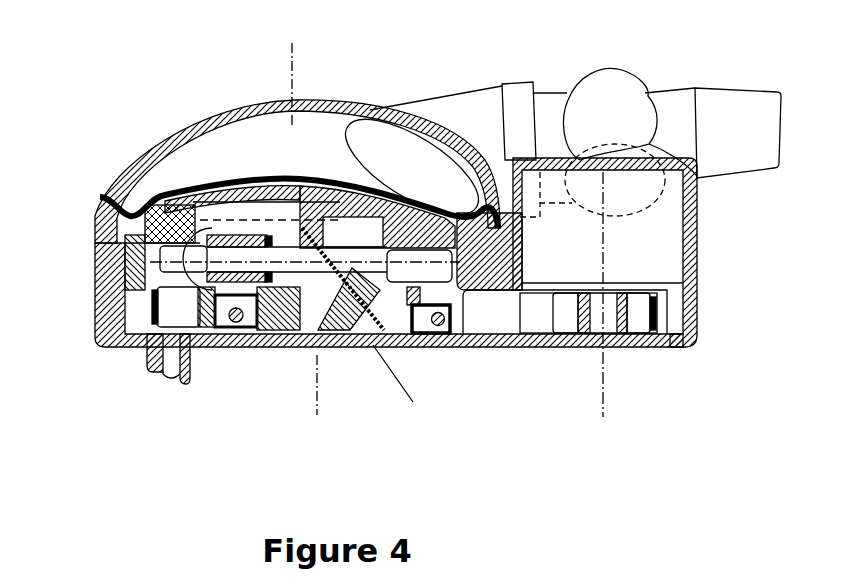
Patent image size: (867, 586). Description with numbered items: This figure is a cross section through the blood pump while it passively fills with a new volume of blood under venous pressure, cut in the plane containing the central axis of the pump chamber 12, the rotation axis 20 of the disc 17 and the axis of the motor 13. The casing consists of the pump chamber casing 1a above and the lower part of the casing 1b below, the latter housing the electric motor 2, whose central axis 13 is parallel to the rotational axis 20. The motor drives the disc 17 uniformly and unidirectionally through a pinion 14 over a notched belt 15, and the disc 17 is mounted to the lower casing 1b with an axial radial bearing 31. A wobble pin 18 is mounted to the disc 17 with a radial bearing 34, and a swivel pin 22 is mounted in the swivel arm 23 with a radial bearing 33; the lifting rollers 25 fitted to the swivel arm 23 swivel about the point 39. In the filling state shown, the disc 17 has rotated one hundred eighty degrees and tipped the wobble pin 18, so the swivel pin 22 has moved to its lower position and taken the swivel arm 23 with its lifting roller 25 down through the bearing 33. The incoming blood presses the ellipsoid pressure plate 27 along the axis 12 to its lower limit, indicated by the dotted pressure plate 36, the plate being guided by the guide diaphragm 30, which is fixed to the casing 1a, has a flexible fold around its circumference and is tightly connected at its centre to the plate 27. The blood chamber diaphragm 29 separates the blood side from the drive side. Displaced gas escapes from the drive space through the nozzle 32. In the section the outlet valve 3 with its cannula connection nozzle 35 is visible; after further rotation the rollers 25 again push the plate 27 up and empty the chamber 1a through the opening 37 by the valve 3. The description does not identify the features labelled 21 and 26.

The pump chamber casing 1a is at (113, 172).
The lower part of the casing 1b is at (110, 341).
The electric motor 2 is at (655, 231).
The outlet valve 3 is at (608, 95).
The central axis of the pump chamber 12 is at (292, 67).
The central axis of the electric motor 13 is at (603, 385).
The pinion 14 is at (637, 322).
The notched belt 15 is at (540, 320).
The disc 17 is at (487, 310).
The wobble pin 18 is at (340, 337).
The rotational axis of the disc 20 is at (318, 392).
The base plate 21 is at (395, 380).
The swivel pin 22 is at (303, 228).
The swivel arm 23 is at (246, 330).
The lifting rollers 25 is at (176, 307).
The pin 26 is at (148, 257).
The pressure plate 27 is at (183, 203).
The blood chamber diaphragm 29 is at (146, 208).
The guide diaphragm 30 is at (218, 202).
The axial radial bearing 31 is at (452, 312).
The nozzle 32 is at (173, 362).
The radial bearing 33 is at (262, 235).
The radial bearing 34 is at (388, 263).
The cannula connection nozzle 35 is at (725, 103).
The pressure plate 36 is at (125, 268).
The opening 37 is at (408, 160).
The point 39 is at (338, 238).